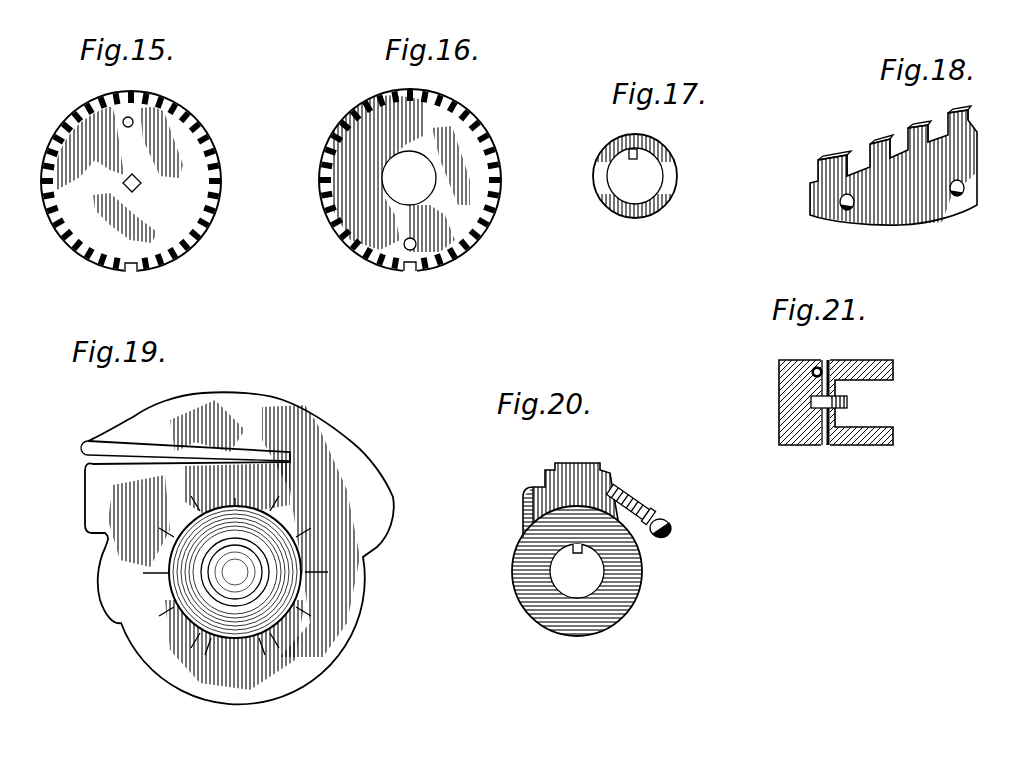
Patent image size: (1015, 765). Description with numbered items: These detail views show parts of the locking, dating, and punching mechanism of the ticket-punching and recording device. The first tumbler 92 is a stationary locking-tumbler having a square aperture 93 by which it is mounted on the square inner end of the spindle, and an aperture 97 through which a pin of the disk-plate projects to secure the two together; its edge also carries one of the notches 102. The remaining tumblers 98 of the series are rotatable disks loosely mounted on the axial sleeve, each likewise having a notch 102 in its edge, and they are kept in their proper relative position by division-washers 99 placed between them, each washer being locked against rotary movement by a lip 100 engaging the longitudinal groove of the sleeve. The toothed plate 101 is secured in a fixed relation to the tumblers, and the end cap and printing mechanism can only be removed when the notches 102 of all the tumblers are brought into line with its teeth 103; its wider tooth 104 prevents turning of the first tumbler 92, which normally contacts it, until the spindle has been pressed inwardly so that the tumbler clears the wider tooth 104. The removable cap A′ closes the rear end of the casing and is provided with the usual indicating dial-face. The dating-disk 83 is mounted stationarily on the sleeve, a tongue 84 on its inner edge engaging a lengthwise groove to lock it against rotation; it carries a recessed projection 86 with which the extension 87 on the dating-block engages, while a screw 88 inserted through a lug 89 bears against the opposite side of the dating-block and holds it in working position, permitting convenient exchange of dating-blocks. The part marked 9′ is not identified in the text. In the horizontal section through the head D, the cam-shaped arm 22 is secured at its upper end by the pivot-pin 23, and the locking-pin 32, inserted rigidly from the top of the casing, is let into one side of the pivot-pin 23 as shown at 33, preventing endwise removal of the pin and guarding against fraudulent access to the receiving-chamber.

In FIG. 15, the first tumbler 92 is at (187, 148).
In FIG. 15, the square aperture 93 is at (138, 188).
In FIG. 15, the aperture 97 is at (132, 118).
In FIG. 15, the notches 102 is at (130, 272).
In FIG. 16, the notches 102 is at (410, 271).
In FIG. 16, the tumblers 98 is at (410, 180).
In FIG. 17, the division-washers 99 is at (648, 217).
In FIG. 17, the lip 100 is at (637, 157).
In FIG. 18, the toothed plate 101 is at (922, 213).
In FIG. 18, the teeth 103 is at (953, 110).
In FIG. 18, the wider tooth 104 is at (830, 160).
In FIG. 19, the removable cap A′ is at (237, 548).
In FIG. 20, the dating-disk 83 is at (623, 580).
In FIG. 20, the tongue 84 is at (578, 553).
In FIG. 20, the recessed projection 86 is at (537, 493).
In FIG. 20, the extension 87 is at (537, 513).
In FIG. 20, the stud 9′ is at (583, 487).
In FIG. 20, the screw 88 is at (634, 503).
In FIG. 20, the lug 89 is at (655, 509).
In FIG. 21, the head D is at (797, 440).
In FIG. 21, the pivot-pin 23 is at (827, 447).
In FIG. 21, the cam-shaped arm 22 is at (848, 402).
In FIG. 21, the recess in pivot-pin 33 is at (832, 363).
In FIG. 21, the locking-pin 32 is at (814, 376).